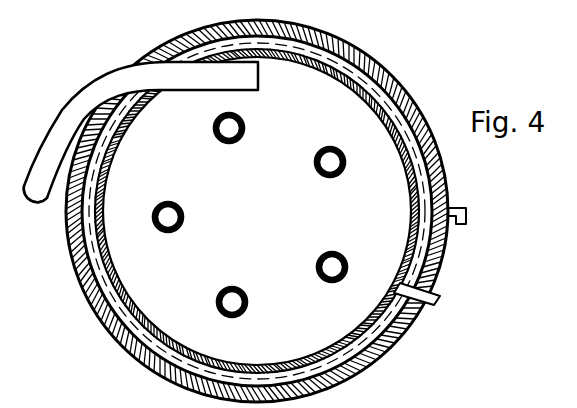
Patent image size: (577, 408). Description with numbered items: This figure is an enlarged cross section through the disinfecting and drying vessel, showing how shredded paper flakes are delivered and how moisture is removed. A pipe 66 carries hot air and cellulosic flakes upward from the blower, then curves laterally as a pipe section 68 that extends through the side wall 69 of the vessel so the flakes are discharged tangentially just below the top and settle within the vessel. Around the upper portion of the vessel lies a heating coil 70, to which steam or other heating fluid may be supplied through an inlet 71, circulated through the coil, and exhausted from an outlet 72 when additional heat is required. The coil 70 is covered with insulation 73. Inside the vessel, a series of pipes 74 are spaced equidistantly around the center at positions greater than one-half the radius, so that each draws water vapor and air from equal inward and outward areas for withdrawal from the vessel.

The pipe 66 is at (32, 210).
The pipe section 68 is at (104, 71).
The side wall 69 is at (334, 78).
The heating coil 70 is at (398, 315).
The inlet 71 is at (443, 299).
The outlet 72 is at (457, 224).
The insulation 73 is at (368, 73).
The pipes 74 is at (225, 143).